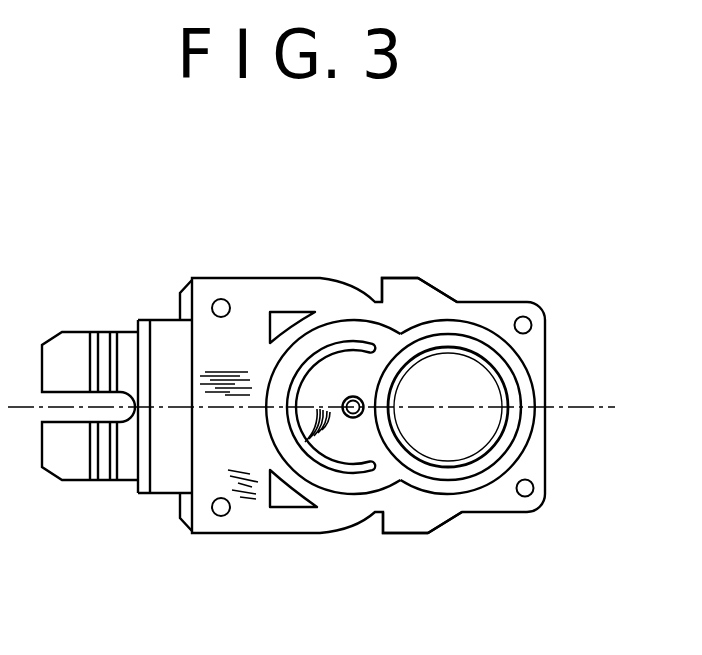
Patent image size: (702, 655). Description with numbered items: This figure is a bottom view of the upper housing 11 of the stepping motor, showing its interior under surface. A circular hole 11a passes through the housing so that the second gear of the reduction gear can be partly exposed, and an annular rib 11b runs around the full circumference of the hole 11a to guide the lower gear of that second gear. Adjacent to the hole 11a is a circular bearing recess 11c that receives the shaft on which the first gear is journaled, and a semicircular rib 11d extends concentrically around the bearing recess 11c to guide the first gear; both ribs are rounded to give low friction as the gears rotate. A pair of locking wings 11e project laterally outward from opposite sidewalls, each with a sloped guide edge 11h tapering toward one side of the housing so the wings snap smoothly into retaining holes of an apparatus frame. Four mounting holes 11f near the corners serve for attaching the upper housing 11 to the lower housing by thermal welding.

The upper housing 11 is at (175, 213).
The circular hole 11a is at (483, 398).
The annular rib 11b is at (513, 413).
The circular bearing recess 11c is at (351, 420).
The semicircular rib 11d is at (340, 345).
The locking wing 11e is at (407, 278).
The mounting hole 11f is at (218, 300).
The sloped guide edge 11h is at (444, 292).